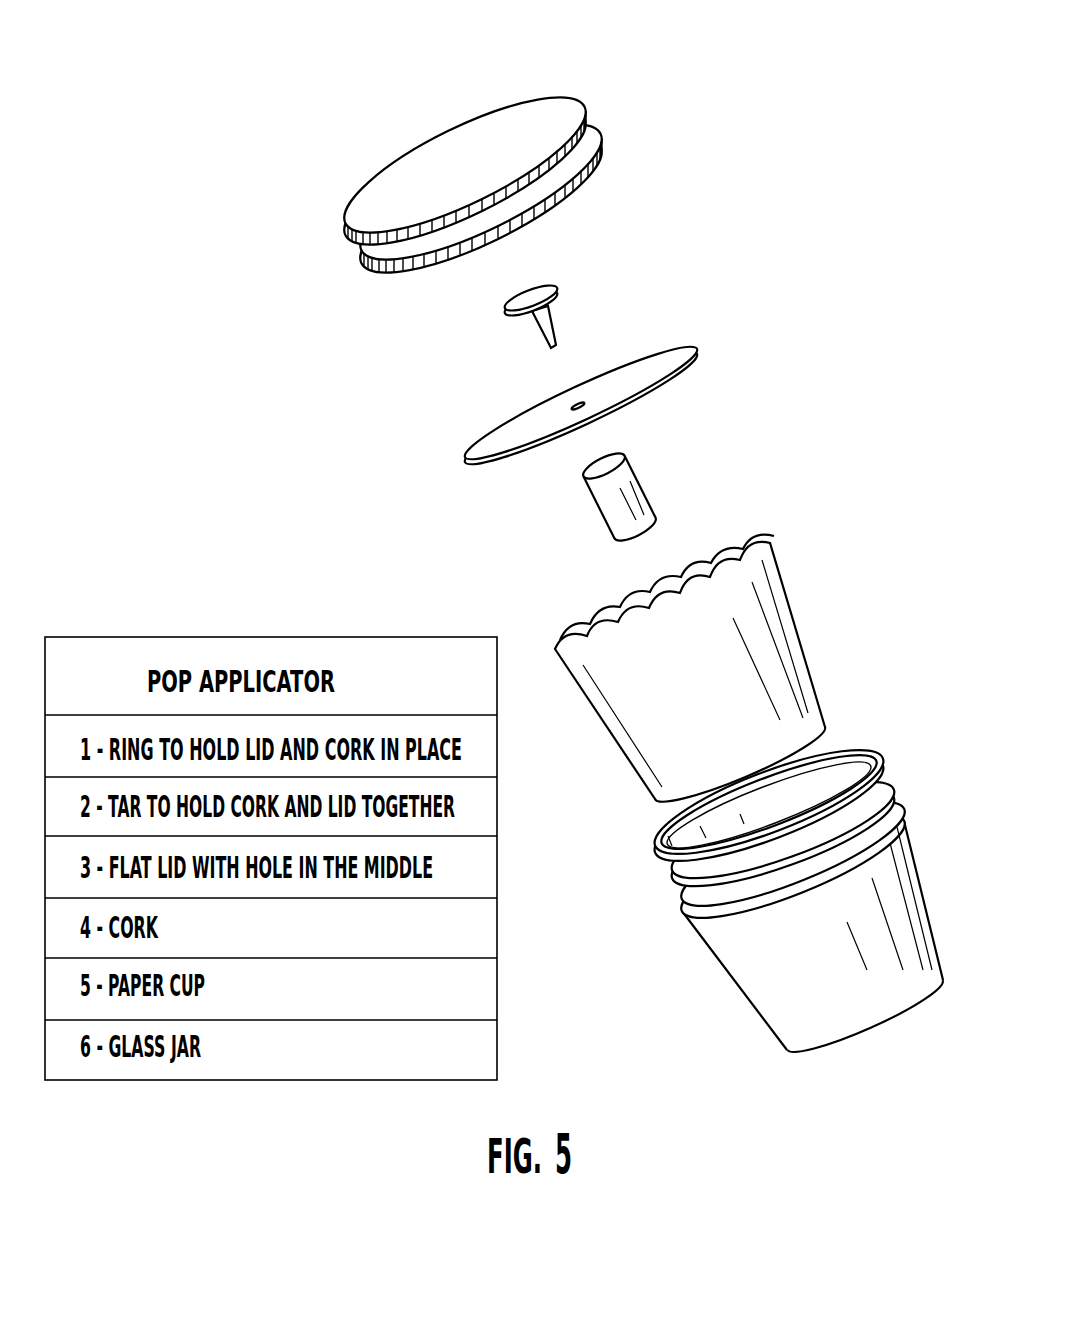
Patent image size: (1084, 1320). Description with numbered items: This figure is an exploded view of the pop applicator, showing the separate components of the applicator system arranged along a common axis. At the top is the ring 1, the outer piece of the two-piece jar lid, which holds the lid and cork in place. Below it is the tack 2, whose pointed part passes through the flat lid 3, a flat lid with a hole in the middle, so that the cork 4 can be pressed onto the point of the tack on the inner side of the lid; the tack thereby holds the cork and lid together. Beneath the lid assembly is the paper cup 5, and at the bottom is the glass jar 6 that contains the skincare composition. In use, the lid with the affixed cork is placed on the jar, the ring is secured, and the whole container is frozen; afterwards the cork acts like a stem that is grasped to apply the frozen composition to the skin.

The ring to hold lid and cork in place 1 is at (612, 162).
The tar to hold cork and lid together 2 is at (553, 328).
The flat lid with hole in the middle 3 is at (690, 371).
The cork 4 is at (647, 500).
The paper cup 5 is at (802, 648).
The glass jar 6 is at (920, 900).